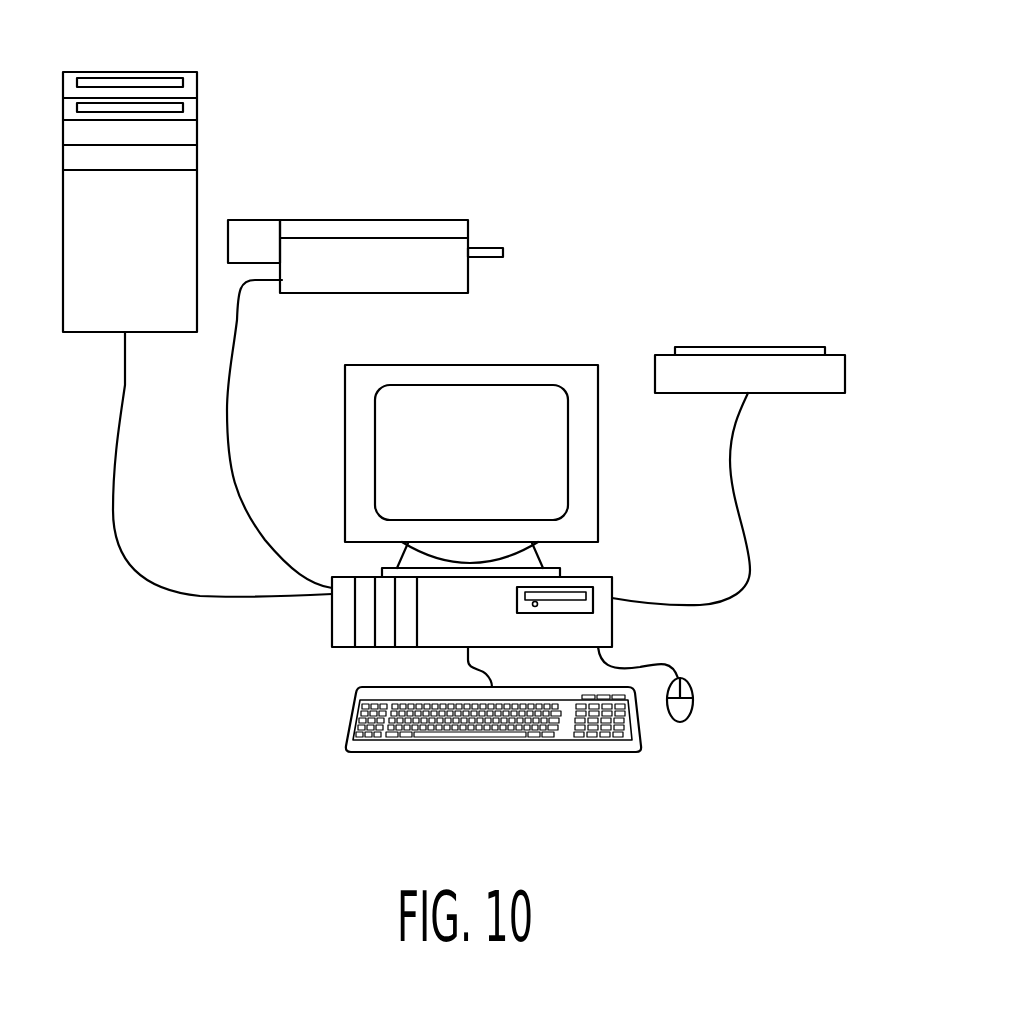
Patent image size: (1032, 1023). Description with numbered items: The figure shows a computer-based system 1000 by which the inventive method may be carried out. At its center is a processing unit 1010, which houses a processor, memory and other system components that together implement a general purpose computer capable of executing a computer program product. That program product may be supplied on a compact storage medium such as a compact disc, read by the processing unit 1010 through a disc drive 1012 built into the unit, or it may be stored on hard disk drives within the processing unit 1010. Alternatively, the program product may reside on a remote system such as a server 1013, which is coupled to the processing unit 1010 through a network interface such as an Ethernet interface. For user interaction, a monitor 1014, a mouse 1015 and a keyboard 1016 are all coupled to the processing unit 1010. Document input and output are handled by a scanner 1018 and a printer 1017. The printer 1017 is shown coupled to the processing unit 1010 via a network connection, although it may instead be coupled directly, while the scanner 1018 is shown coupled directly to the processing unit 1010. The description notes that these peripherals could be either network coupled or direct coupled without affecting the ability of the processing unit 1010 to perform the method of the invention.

The computer-based system 1000 is at (822, 140).
The processing unit 1010 is at (441, 589).
The disc drive 1012 is at (613, 592).
The server 1013 is at (197, 183).
The monitor 1014 is at (567, 365).
The mouse 1015 is at (693, 710).
The keyboard 1016 is at (345, 727).
The printer 1017 is at (421, 220).
The scanner 1018 is at (779, 347).